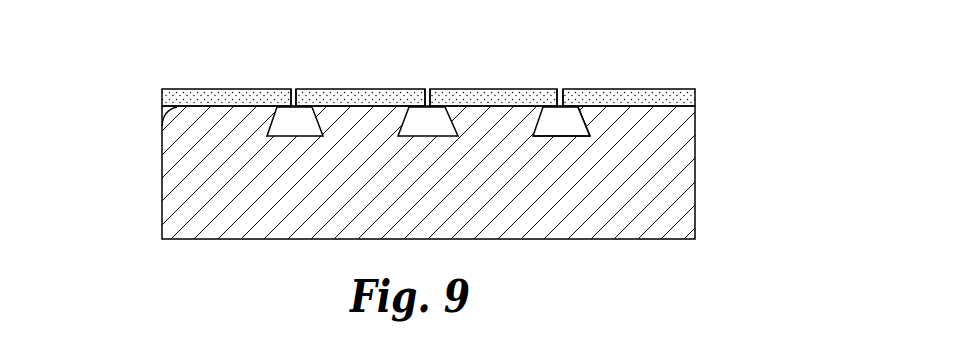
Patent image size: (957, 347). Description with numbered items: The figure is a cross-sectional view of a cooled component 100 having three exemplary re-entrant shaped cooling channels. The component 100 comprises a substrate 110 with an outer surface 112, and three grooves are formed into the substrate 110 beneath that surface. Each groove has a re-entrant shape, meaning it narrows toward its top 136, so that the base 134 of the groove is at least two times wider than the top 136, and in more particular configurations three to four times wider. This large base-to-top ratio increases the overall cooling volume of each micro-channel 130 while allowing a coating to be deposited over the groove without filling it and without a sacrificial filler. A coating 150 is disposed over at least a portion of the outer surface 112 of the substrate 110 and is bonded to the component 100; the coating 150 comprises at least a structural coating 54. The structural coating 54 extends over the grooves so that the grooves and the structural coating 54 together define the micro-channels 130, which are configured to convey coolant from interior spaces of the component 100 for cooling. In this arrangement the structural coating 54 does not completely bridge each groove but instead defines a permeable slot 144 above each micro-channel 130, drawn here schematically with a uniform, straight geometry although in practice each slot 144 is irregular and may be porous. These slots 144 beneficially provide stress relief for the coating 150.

The component 100 is at (68, 50).
The substrate 110 is at (675, 182).
The outer surface 112 is at (162, 127).
The micro-channel 130 is at (578, 128).
The base 134 is at (566, 139).
The top 136 is at (576, 109).
The permeable slot 144 is at (295, 90).
The coating 150 is at (395, 55).
The structural coating 54 is at (200, 97).